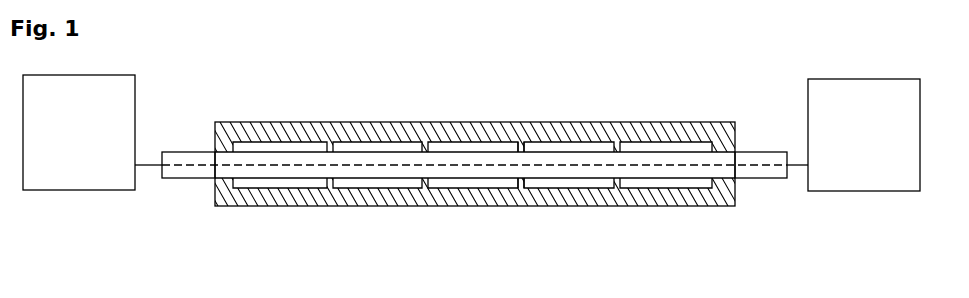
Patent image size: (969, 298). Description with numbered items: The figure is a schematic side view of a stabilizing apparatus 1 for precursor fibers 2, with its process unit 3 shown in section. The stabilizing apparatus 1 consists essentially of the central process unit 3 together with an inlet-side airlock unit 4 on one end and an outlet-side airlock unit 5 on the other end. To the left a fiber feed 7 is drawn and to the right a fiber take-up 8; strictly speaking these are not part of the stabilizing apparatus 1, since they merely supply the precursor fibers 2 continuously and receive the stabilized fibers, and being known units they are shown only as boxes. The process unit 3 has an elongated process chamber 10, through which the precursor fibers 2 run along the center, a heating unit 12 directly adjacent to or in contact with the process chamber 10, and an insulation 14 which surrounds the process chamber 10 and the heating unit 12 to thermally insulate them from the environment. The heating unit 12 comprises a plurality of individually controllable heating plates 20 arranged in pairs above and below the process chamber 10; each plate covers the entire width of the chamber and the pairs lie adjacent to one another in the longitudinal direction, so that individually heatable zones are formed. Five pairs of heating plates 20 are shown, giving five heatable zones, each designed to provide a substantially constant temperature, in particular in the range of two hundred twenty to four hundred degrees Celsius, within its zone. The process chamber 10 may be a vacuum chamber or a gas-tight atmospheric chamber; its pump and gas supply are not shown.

The stabilizing apparatus 1 is at (753, 56).
The precursor fibers 2 is at (795, 163).
The process unit 3 is at (700, 214).
The inlet-side airlock unit 4 is at (178, 183).
The outlet-side airlock unit 5 is at (768, 182).
The fiber feed 7 is at (83, 194).
The fiber take-up 8 is at (878, 196).
The process chamber 10 is at (226, 187).
The heating unit 12 is at (229, 144).
The insulation 14 is at (522, 142).
The heating plates 20 is at (560, 184).